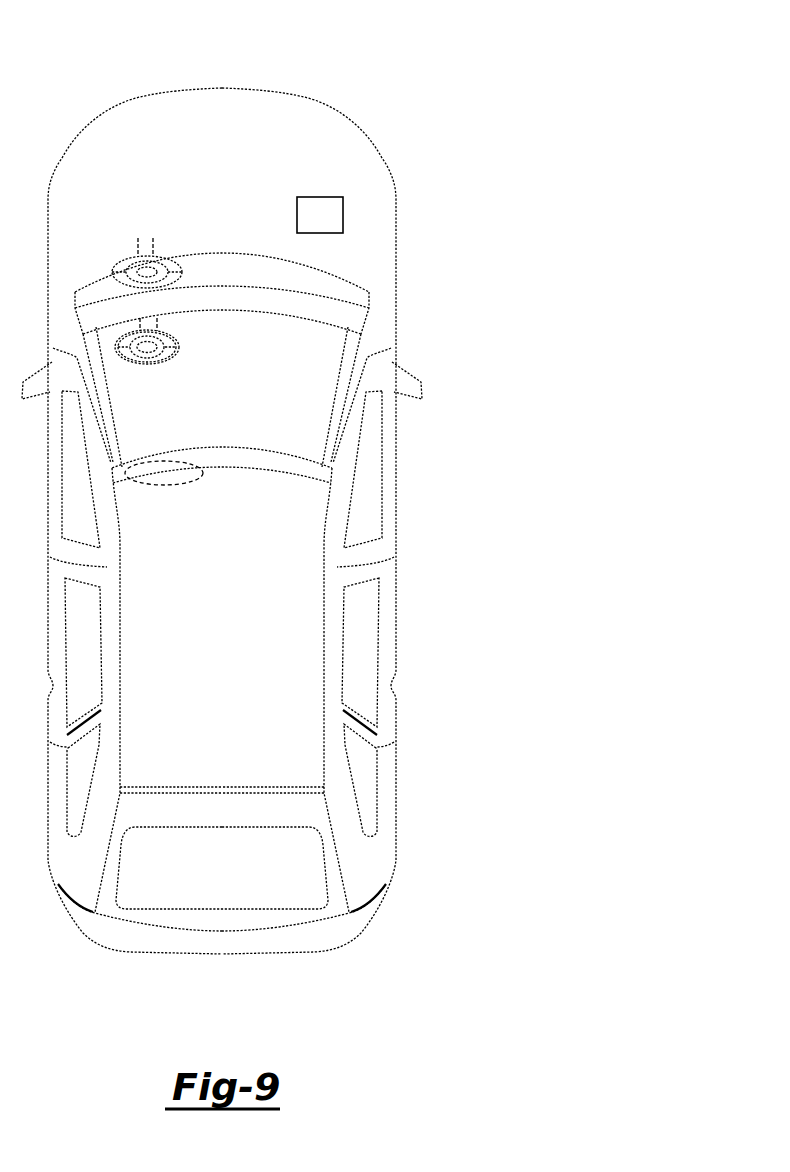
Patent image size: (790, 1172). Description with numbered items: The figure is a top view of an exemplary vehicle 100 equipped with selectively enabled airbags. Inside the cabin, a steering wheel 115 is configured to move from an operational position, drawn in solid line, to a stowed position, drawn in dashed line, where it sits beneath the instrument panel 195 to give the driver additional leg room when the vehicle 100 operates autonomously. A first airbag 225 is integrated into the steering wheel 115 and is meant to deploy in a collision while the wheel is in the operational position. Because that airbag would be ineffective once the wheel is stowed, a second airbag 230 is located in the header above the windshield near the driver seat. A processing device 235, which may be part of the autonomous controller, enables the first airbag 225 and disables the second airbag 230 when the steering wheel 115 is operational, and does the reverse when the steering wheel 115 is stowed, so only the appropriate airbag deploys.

The vehicle 100 is at (320, 104).
The steering wheel 115 is at (161, 256).
The instrument panel 195 is at (322, 326).
The first airbag 225 is at (158, 349).
The second airbag 230 is at (162, 486).
The processing device 235 is at (343, 212).